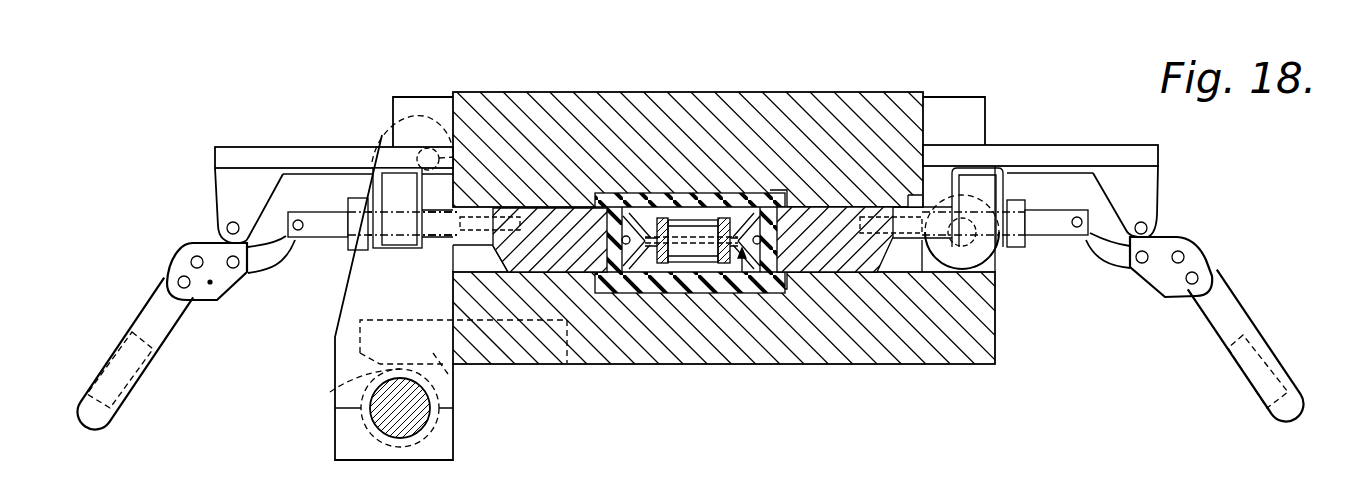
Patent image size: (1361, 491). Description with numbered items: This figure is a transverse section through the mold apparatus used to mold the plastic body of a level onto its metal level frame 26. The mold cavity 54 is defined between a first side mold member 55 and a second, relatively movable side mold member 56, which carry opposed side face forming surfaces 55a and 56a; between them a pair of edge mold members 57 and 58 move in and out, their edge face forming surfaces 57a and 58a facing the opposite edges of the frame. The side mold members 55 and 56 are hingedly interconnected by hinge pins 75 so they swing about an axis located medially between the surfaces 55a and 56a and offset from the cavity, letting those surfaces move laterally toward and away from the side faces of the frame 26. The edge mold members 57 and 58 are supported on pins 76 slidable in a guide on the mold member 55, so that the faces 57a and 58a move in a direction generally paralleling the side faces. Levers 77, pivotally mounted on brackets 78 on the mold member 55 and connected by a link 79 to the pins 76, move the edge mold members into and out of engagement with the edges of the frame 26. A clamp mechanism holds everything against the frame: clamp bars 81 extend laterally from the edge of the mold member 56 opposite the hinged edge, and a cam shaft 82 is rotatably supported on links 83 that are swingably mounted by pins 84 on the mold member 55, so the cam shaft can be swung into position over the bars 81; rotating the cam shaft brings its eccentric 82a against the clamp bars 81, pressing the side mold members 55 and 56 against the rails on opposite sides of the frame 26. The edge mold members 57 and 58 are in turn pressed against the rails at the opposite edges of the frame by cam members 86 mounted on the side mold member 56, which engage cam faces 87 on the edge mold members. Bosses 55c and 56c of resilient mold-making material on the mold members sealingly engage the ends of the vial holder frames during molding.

The metal level frame 26 is at (742, 258).
The mold cavity 54 is at (740, 207).
The first side mold member 55 is at (877, 105).
The side face forming surface 55a is at (641, 207).
The boss 55c is at (692, 205).
The second side mold member 56 is at (906, 362).
The side face forming surface 56a is at (640, 283).
The boss 56c is at (713, 263).
The edge mold member 57 is at (842, 260).
The edge face forming surface 57a is at (780, 239).
The edge mold member 58 is at (552, 278).
The edge face forming surface 58a is at (607, 236).
The hinge pin 75 is at (1000, 258).
The pin 76 is at (440, 228).
The lever 77 is at (390, 243).
The bracket 78 is at (285, 160).
The link 79 is at (273, 262).
The clamp bar 81 is at (457, 378).
The cam shaft 82 is at (414, 428).
The eccentric 82a is at (333, 390).
The link 83 is at (352, 362).
The pin 84 is at (470, 143).
The cam member 86 is at (470, 263).
The cam face 87 is at (512, 272).